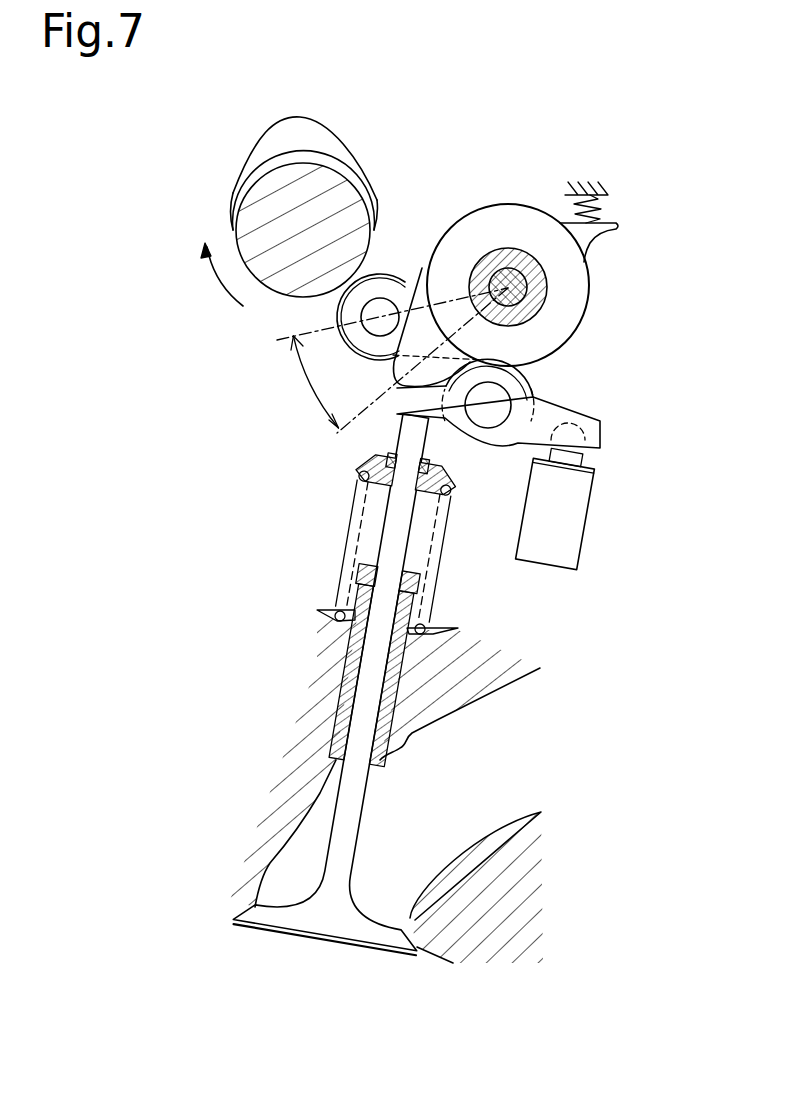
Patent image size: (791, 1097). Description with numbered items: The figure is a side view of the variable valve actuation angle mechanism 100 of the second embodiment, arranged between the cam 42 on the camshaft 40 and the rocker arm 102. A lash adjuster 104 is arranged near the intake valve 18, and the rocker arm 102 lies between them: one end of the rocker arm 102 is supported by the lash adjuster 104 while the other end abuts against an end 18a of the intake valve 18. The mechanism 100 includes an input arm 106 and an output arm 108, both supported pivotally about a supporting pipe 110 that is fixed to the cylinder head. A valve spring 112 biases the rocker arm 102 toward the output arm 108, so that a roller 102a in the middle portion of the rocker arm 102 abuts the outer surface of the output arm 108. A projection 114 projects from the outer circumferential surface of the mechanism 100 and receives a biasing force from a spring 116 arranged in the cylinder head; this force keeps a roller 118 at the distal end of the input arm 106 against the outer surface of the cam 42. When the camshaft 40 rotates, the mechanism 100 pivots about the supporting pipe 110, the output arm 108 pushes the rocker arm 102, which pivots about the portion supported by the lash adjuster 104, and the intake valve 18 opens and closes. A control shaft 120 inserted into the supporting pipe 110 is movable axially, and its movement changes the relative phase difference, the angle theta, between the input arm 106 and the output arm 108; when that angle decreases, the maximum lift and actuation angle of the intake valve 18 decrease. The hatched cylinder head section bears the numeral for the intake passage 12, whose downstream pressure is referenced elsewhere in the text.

The intake passage 12 is at (497, 794).
The intake valve 18 is at (356, 832).
The end of the intake valve 18a is at (395, 437).
The camshaft 40 is at (242, 218).
The cam 42 is at (264, 144).
The variable valve actuation angle mechanism 100 is at (433, 170).
The rocker arm 102 is at (587, 421).
The roller 102a is at (505, 373).
The lash adjuster 104 is at (580, 527).
The input arm 106 is at (406, 278).
The output arm 108 is at (397, 370).
The supporting pipe 110 is at (487, 258).
The valve spring 112 is at (352, 509).
The projection 114 is at (624, 232).
The spring 116 is at (603, 207).
The roller 118 is at (337, 318).
The control shaft 120 is at (513, 266).